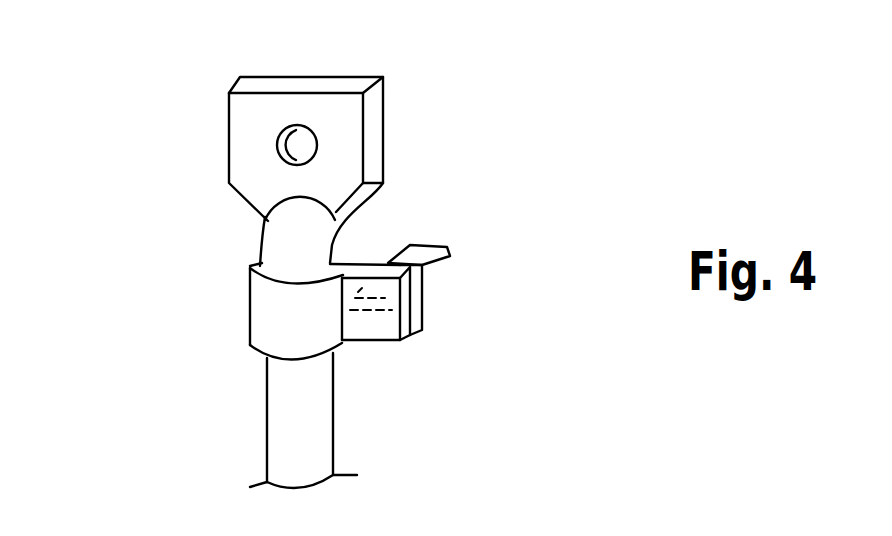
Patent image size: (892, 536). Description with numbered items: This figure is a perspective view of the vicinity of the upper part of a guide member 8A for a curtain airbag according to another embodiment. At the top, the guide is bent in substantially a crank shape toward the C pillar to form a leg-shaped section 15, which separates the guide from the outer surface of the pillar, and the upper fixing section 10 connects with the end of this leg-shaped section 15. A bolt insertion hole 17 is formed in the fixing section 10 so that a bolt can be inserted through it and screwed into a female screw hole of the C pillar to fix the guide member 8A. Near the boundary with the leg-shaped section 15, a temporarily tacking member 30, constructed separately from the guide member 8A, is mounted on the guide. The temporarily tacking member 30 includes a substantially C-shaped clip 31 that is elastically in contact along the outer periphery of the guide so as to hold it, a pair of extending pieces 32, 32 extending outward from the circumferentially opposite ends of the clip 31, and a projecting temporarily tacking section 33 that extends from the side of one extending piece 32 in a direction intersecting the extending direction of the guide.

The guide member 8A is at (212, 105).
The upper fixing section 10 is at (383, 103).
The bolt insertion hole 17 is at (284, 124).
The leg-shaped section 15 is at (262, 222).
The temporarily tacking member 30 is at (223, 352).
The clip 31 is at (252, 312).
The extending piece 32 is at (427, 316).
The temporarily tacking section 33 is at (437, 235).